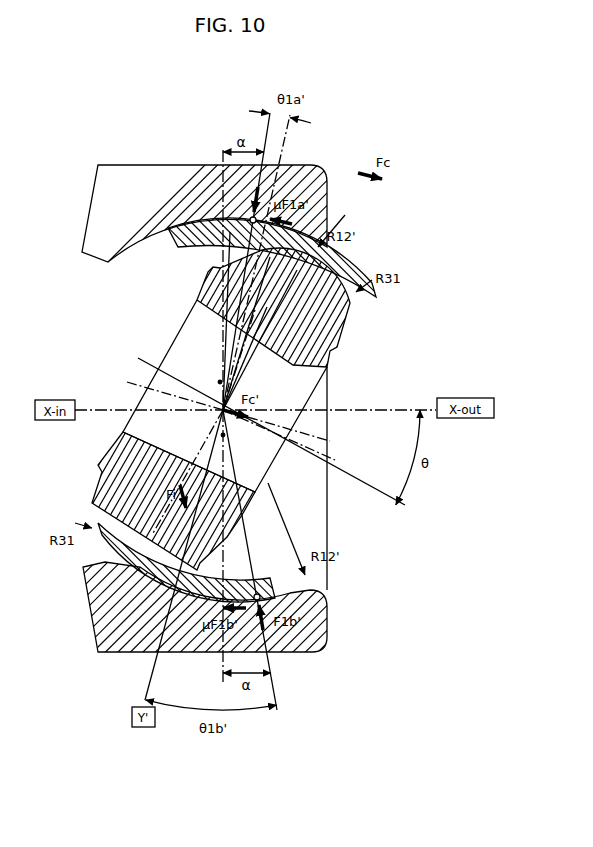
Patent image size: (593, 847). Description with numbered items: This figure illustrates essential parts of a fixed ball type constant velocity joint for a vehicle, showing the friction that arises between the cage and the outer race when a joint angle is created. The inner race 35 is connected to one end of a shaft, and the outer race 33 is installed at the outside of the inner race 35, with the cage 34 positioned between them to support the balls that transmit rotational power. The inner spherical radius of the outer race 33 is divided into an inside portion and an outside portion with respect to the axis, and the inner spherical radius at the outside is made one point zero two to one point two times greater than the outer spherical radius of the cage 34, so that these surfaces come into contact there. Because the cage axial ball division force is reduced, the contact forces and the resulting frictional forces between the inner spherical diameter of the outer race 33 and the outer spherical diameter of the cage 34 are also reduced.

The outer race 33 is at (131, 190).
The cage 34 is at (340, 257).
The inner race 35 is at (330, 337).